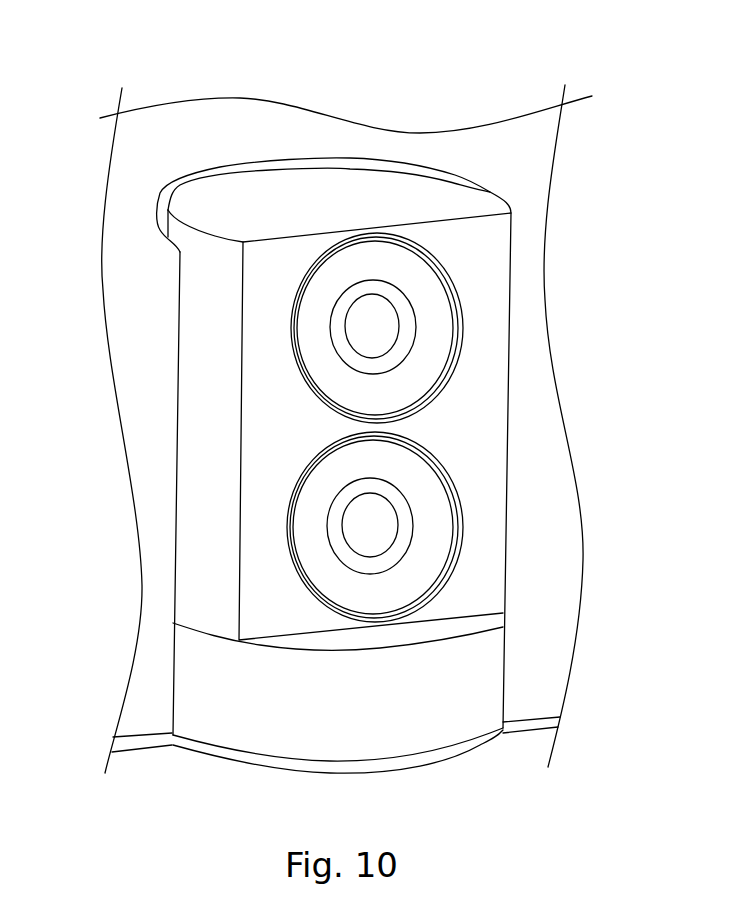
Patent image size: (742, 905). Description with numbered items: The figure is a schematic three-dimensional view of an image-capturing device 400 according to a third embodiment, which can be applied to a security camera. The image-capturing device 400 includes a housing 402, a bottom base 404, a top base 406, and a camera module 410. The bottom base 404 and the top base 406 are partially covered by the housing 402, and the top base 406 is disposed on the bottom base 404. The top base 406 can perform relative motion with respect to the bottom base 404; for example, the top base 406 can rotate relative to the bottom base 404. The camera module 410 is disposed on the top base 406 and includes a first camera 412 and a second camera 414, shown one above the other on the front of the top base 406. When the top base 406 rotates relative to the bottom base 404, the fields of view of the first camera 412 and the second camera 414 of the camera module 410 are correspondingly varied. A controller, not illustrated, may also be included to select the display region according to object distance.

The image-capturing device 400 is at (74, 63).
The housing 402 is at (537, 148).
The bottom base 404 is at (465, 660).
The top base 406 is at (483, 568).
The camera module 410 is at (507, 427).
The first camera 412 is at (440, 322).
The second camera 414 is at (437, 508).